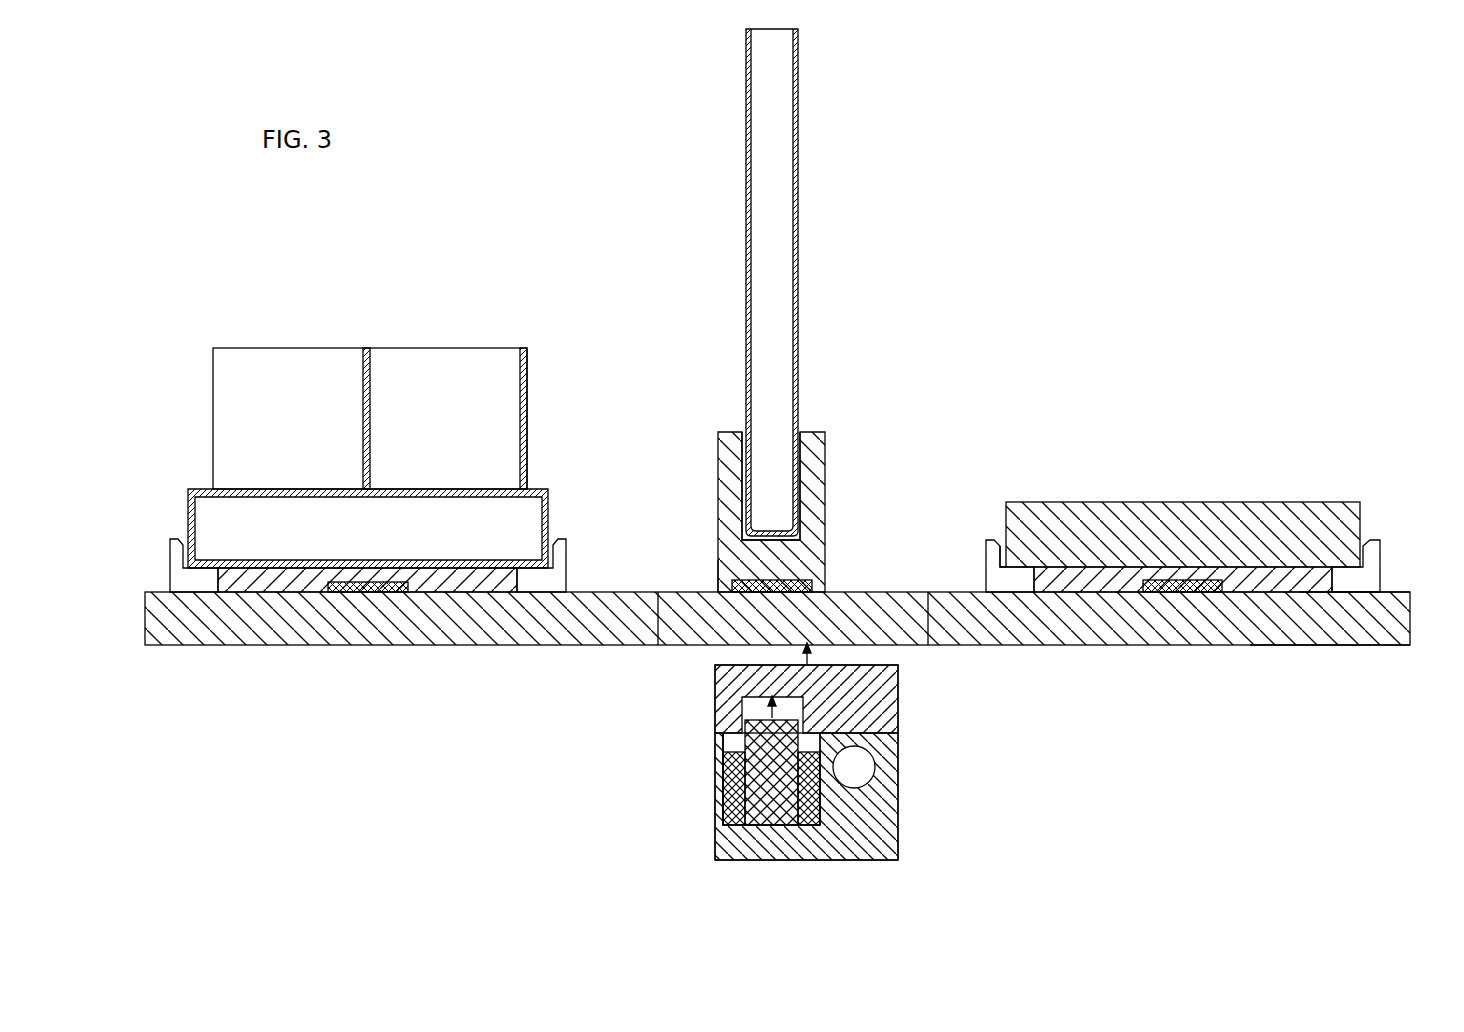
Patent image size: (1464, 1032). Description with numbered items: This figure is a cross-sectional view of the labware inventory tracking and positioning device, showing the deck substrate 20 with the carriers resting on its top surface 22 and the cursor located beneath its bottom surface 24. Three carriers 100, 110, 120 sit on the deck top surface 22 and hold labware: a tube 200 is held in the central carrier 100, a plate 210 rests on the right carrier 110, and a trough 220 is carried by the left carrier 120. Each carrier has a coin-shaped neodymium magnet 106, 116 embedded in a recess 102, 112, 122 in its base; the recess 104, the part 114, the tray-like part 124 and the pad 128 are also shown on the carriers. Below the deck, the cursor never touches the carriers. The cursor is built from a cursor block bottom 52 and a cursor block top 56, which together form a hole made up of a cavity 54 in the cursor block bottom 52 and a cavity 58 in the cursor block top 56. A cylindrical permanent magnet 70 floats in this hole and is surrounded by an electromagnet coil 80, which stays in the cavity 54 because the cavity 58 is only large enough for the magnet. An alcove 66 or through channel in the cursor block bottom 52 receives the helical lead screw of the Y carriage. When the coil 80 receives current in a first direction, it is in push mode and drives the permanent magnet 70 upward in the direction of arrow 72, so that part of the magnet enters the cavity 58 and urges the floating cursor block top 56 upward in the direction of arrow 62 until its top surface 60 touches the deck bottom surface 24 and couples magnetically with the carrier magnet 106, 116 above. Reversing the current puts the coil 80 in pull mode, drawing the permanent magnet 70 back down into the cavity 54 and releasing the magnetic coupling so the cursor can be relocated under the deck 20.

The deck substrate 20 is at (145, 645).
The deck top surface 22 is at (1398, 592).
The deck bottom surface 24 is at (1323, 645).
The cursor block bottom 52 is at (898, 860).
The cavity 54 is at (723, 768).
The cursor block top 56 is at (898, 720).
The cavity 58 is at (772, 710).
The top surface 60 is at (883, 665).
The arrow 62 is at (800, 652).
The alcove 66 is at (857, 780).
The permanent magnet 70 is at (773, 807).
The arrow 72 is at (810, 812).
The coil 80 is at (723, 797).
The carrier 100 is at (825, 432).
The recess 102 is at (723, 580).
The receiving bore 104 is at (765, 437).
The neodymium magnet 106 is at (797, 573).
The carrier 110 is at (1380, 538).
The recess 112 is at (1163, 577).
The groove 114 is at (1002, 550).
The neodymium magnet 116 is at (1193, 593).
The carrier 120 is at (170, 540).
The recess 122 is at (350, 592).
The tray 124 is at (205, 548).
The thermal pad 128 is at (388, 592).
The tube 200 is at (798, 133).
The plate 210 is at (1300, 522).
The trough 220 is at (213, 392).